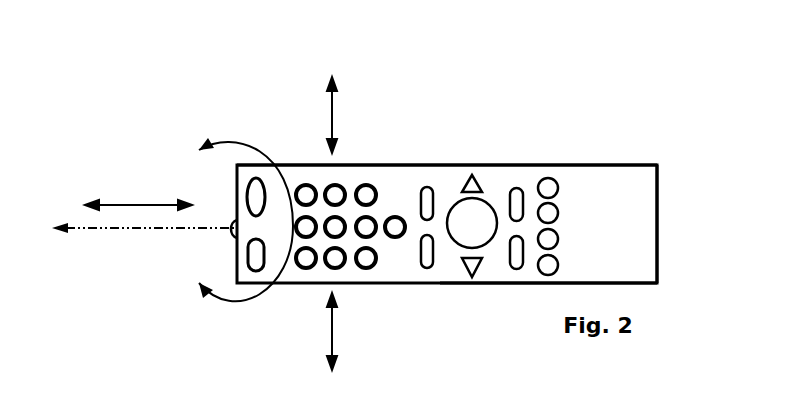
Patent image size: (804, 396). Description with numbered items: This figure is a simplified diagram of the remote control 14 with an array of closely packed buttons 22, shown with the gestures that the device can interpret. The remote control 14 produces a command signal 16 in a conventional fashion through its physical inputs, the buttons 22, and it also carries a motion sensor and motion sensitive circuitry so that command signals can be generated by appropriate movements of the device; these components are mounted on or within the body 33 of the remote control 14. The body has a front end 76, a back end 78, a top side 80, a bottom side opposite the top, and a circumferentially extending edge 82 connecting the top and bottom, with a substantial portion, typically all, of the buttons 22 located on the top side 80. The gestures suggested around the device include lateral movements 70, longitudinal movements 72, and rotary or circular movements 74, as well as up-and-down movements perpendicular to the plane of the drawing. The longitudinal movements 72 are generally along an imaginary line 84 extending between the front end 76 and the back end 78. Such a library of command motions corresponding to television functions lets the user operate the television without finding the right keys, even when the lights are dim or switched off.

The remote control 14 is at (423, 103).
The command signal 16 is at (144, 243).
The buttons 22 is at (429, 188).
The body 33 is at (459, 283).
The lateral movements 70 is at (332, 117).
The longitudinal movements 72 is at (118, 203).
The rotary or circular movements 74 is at (240, 137).
The front end 76 is at (237, 270).
The back end 78 is at (657, 202).
The top side 80 is at (598, 180).
The circumferentially extending edge 82 is at (633, 283).
The imaginary line 84 is at (88, 229).